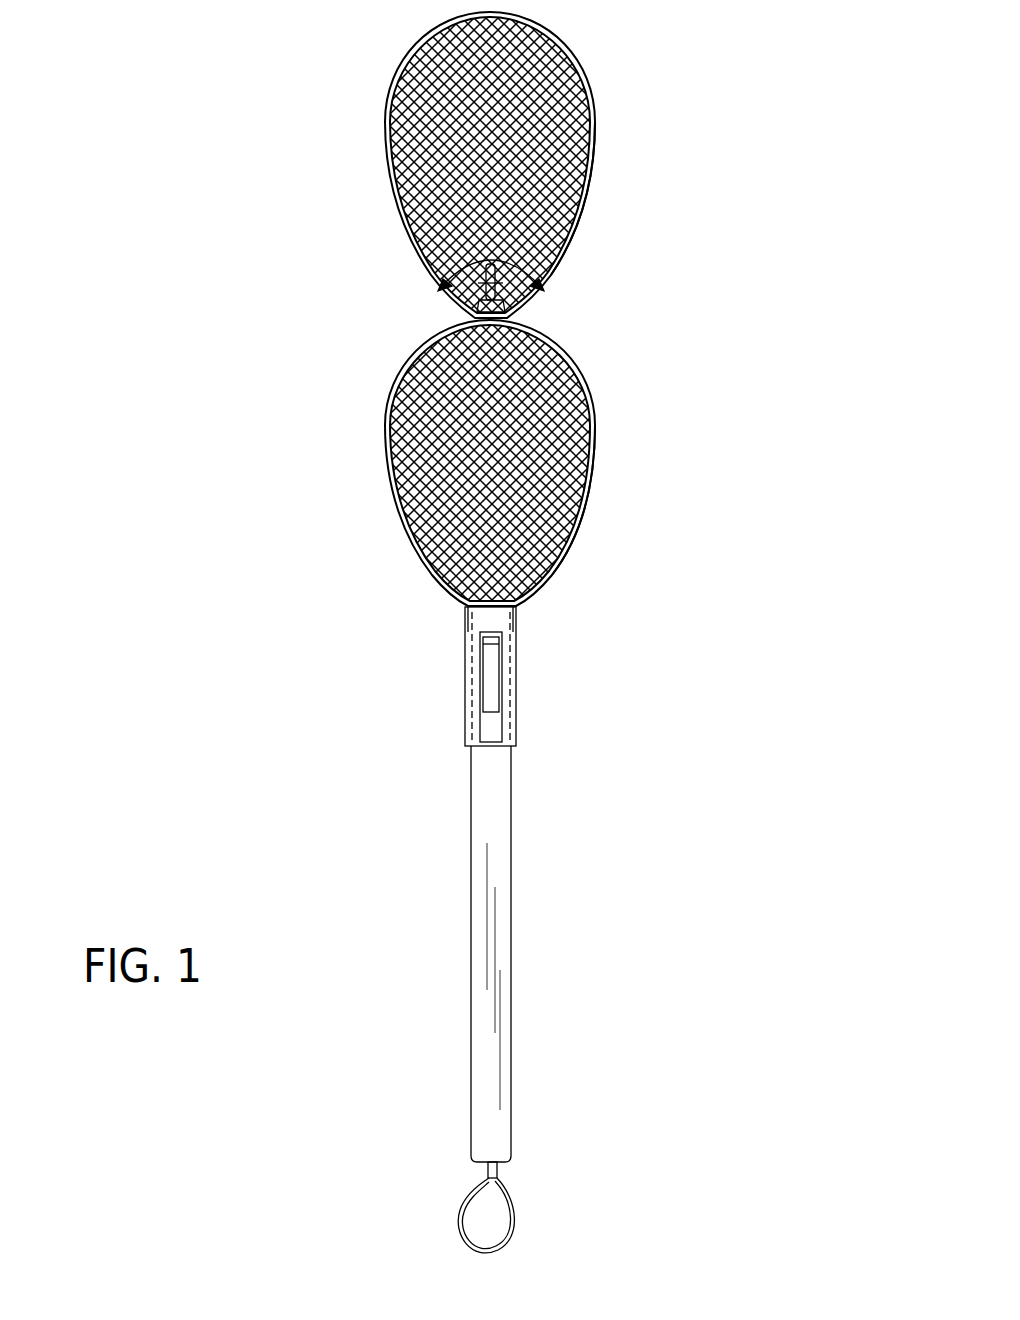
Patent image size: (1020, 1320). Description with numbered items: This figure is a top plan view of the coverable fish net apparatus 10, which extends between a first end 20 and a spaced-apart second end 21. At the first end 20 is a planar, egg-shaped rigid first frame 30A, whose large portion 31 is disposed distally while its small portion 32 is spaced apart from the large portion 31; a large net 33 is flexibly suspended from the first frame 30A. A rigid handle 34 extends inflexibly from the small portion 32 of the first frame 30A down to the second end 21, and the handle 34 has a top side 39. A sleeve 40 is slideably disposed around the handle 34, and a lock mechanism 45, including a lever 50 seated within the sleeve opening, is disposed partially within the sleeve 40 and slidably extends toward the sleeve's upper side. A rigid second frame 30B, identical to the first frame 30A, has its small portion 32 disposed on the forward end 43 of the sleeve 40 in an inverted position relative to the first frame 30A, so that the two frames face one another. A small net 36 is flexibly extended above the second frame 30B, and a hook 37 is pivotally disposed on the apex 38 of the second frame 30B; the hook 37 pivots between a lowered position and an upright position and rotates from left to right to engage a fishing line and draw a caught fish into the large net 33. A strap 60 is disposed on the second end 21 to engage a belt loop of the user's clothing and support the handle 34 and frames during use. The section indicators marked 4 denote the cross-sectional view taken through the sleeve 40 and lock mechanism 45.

The coverable fish net apparatus 10 is at (656, 171).
The first end 20 is at (400, 34).
The second end 21 is at (510, 1167).
The first frame 30A is at (590, 193).
The second frame 30B is at (596, 413).
The large portion 31 is at (400, 71).
The small portion 32 is at (555, 281).
The large net 33 is at (563, 92).
The handle 34 is at (471, 858).
The small net 36 is at (562, 476).
The hook 37 is at (532, 298).
The apex 38 is at (474, 316).
The top side 39 is at (505, 822).
The sleeve 40 is at (517, 677).
The forward end 43 is at (480, 620).
The lock mechanism 45 is at (455, 691).
The lever 50 is at (490, 661).
The strap 60 is at (512, 1215).
The section line 4- 4 is at (478, 612).